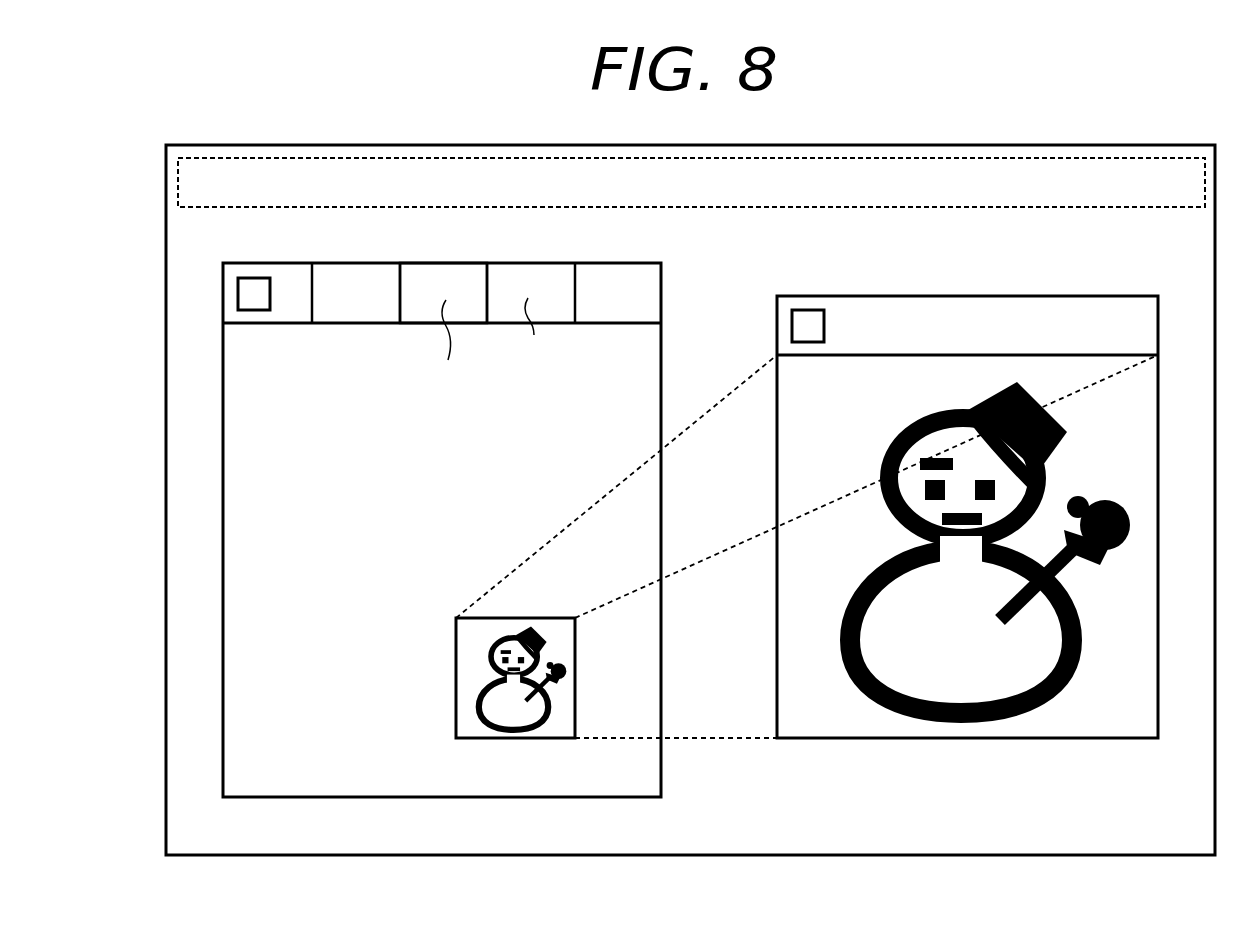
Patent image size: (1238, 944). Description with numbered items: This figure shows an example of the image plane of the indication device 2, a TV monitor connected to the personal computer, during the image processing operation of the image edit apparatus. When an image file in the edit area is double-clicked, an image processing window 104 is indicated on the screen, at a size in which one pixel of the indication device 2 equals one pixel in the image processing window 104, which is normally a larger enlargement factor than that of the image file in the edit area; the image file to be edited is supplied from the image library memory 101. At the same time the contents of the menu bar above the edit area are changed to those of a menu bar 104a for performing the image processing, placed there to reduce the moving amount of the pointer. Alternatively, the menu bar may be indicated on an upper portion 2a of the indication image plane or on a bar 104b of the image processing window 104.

The indication device 2 is at (1172, 148).
The upper portion of the indication image plane 2a is at (1062, 160).
The image library memory 101 is at (469, 512).
The image processing window 104 is at (987, 500).
The menu bar 104a is at (461, 262).
The bar of the image processing window 104b is at (1078, 318).